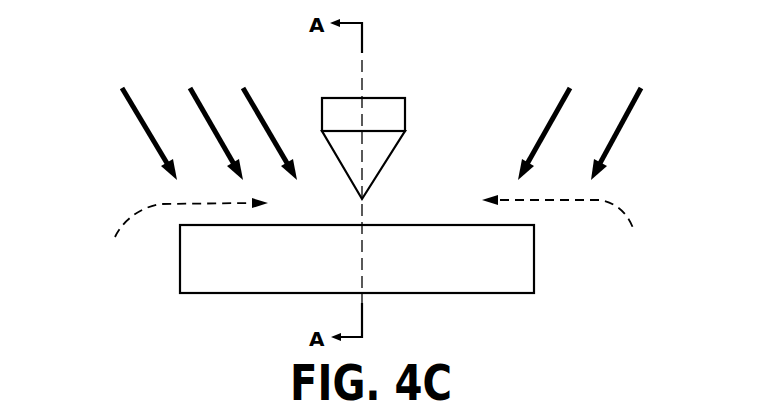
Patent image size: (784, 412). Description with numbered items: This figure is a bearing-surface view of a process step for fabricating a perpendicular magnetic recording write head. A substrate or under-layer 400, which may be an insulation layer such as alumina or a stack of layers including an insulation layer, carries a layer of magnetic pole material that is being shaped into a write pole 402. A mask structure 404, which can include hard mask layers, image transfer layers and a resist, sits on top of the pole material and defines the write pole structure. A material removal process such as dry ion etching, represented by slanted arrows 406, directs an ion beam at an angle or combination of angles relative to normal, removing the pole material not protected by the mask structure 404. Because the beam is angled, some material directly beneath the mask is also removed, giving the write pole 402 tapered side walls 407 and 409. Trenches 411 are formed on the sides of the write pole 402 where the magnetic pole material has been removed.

The substrate 400 is at (506, 268).
The write pole 402 is at (372, 172).
The mask structure 404 is at (377, 118).
The slanted arrows 406 is at (152, 139).
The tapered side wall 407 is at (347, 178).
The tapered side wall 409 is at (373, 187).
The trenches 411 is at (373, 235).